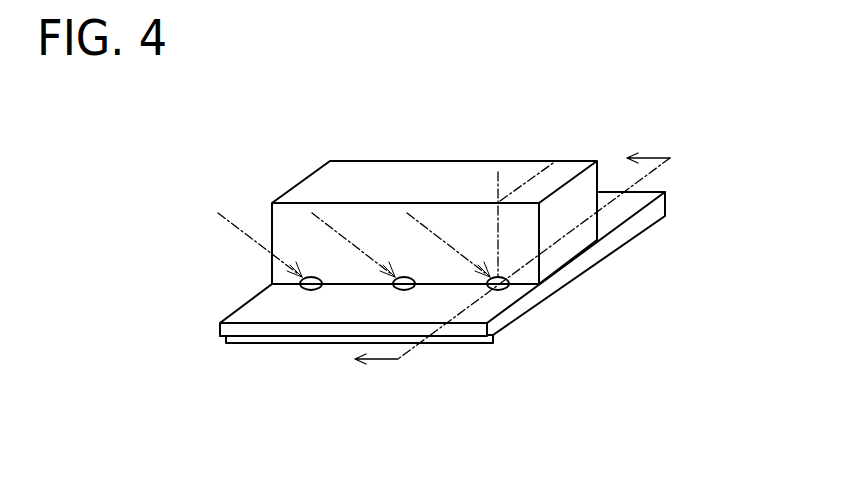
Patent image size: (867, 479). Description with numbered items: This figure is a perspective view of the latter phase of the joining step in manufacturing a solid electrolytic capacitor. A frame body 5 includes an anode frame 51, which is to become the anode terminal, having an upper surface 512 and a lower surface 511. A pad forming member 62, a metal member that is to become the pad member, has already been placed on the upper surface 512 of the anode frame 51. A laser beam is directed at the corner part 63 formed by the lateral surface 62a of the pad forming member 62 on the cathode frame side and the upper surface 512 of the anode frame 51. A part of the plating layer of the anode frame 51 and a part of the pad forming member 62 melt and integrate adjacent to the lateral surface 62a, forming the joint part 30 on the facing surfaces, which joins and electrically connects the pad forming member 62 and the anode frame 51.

The frame body 5 is at (637, 243).
The anode frame 51 is at (567, 279).
The lower surface 511 is at (258, 345).
The upper surface 512 is at (261, 312).
The pad forming member 62 is at (517, 177).
The lateral surface 62a is at (461, 212).
The corner part 63 is at (347, 286).
The joint part 30 is at (504, 289).